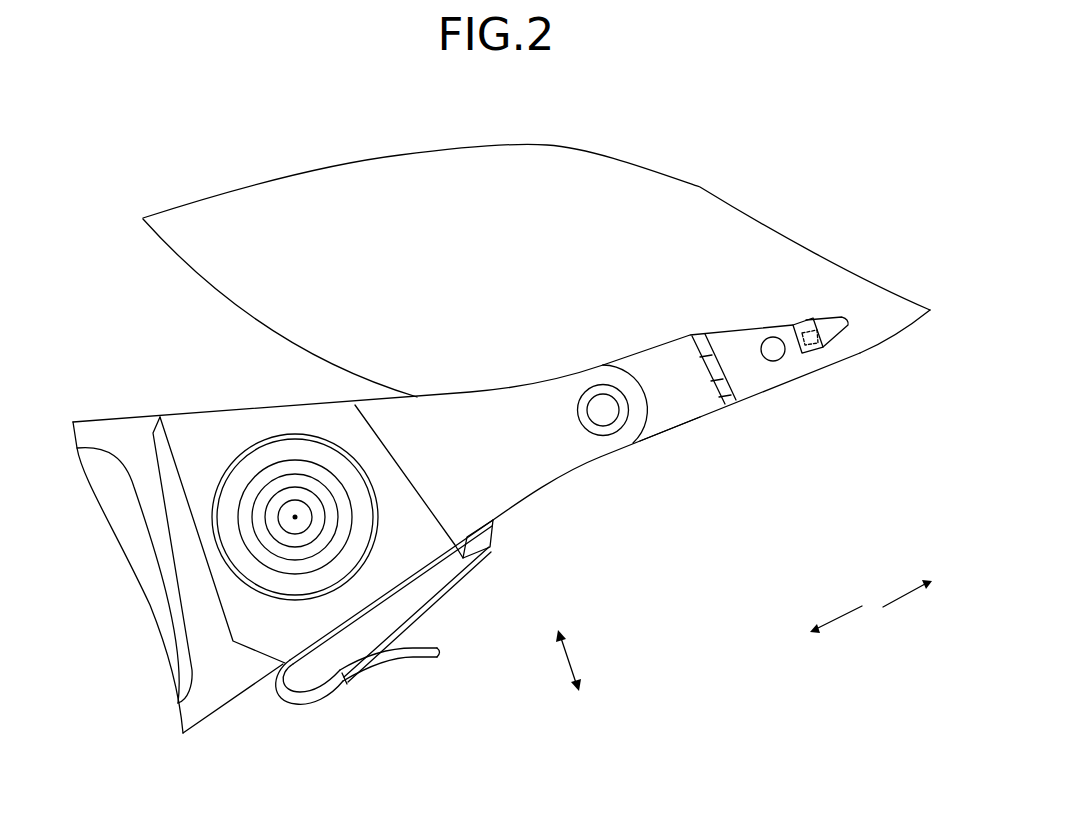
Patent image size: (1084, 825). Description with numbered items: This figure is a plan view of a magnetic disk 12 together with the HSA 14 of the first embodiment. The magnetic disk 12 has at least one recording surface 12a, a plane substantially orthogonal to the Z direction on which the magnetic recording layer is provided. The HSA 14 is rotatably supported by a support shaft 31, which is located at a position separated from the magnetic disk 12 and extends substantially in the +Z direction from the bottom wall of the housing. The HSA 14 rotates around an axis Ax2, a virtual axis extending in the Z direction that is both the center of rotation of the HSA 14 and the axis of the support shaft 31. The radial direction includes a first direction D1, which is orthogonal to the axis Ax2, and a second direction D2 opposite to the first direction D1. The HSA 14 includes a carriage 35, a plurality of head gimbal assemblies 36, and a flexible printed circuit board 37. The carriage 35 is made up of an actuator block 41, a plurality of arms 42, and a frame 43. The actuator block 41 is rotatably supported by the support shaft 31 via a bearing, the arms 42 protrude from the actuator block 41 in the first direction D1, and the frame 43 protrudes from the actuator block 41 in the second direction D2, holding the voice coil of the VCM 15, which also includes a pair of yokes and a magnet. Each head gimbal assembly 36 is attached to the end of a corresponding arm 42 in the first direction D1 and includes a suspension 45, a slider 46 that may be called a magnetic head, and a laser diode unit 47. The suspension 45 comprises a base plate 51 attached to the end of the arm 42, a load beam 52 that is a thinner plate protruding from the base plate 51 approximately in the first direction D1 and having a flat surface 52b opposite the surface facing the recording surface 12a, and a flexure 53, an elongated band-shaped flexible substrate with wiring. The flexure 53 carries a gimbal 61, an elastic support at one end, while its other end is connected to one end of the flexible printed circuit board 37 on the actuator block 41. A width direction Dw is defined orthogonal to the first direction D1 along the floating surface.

The magnetic disk 12 is at (536, 254).
The recording surface 12a is at (348, 187).
The HSA 14 is at (146, 381).
The VCM 15 is at (102, 451).
The support shaft 31 is at (272, 457).
The carriage 35 is at (193, 409).
The head gimbal assembly 36 is at (796, 387).
The flexible printed circuit board 37 is at (423, 659).
The actuator block 41 is at (322, 402).
The arm 42 is at (535, 472).
The frame 43 is at (217, 693).
The suspension 45 is at (808, 335).
The slider 46 is at (808, 353).
The laser diode unit 47 is at (830, 322).
The base plate 51 is at (673, 417).
The load beam 52 is at (735, 410).
The surface 52b is at (738, 382).
The flexure 53 is at (427, 590).
The gimbal 61 is at (818, 318).
The axis Ax2 is at (296, 514).
The width direction Dw is at (586, 660).
The first direction D1 is at (908, 606).
The second direction D2 is at (837, 630).